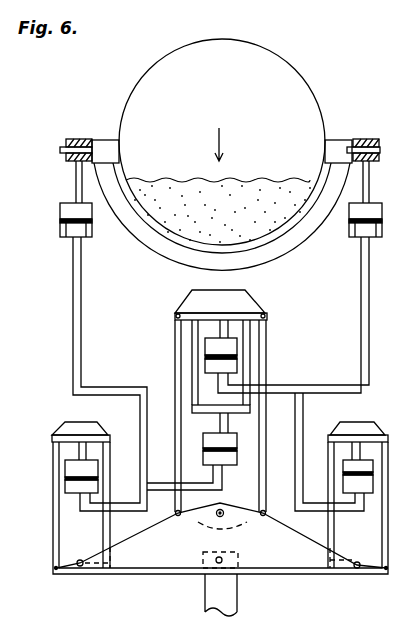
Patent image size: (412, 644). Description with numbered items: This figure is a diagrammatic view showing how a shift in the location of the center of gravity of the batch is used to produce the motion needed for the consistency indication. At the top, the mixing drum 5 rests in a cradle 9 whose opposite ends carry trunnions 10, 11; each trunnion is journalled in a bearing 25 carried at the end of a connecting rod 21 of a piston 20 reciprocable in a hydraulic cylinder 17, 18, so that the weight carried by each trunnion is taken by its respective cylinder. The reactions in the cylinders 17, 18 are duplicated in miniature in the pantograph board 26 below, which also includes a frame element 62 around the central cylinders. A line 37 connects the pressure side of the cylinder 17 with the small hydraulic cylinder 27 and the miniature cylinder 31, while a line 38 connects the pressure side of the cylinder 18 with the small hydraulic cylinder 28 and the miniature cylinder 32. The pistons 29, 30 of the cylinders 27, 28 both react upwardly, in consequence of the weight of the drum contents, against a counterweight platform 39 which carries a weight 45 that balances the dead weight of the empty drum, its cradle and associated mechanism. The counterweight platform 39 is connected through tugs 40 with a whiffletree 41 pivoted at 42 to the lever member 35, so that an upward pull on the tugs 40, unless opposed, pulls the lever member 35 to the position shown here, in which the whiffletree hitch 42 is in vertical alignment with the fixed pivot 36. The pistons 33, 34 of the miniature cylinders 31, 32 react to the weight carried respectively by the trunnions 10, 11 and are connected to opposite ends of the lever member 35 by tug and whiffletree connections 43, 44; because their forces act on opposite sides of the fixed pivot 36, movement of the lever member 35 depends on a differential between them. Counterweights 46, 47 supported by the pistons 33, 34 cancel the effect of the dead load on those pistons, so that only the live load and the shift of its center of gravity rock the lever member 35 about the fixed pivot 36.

The mixing drum 5 is at (297, 74).
The cradle 9 is at (282, 252).
The trunnion 10 is at (60, 150).
The trunnion 11 is at (380, 150).
The hydraulic cylinder 17 is at (60, 212).
The hydraulic cylinder 18 is at (382, 210).
The piston 20 is at (78, 230).
The connecting rod 21 is at (76, 183).
The bearing 25 is at (74, 140).
The pantograph board 26 is at (156, 311).
The hydraulic cylinder 27 is at (240, 462).
The hydraulic cylinder 28 is at (238, 366).
The piston 29 is at (228, 445).
The piston 30 is at (232, 350).
The miniature cylinder 31 is at (66, 482).
The miniature cylinder 32 is at (359, 486).
The piston 33 is at (76, 470).
The piston 34 is at (361, 464).
The lever member 35 is at (180, 547).
The fixed pivot 36 is at (224, 557).
The line 37 is at (74, 287).
The line 38 is at (360, 318).
The counterweight platform 39 is at (264, 316).
The tugs 40 is at (176, 360).
The whiffletree 41 is at (182, 509).
The pivot 42 is at (220, 511).
The tug and whiffletree connection 43 is at (56, 520).
The tug and whiffletree connection 44 is at (383, 572).
The weight 45 is at (202, 304).
The counterweight 46 is at (72, 426).
The counterweight 47 is at (346, 426).
The inner frame 62 is at (196, 334).